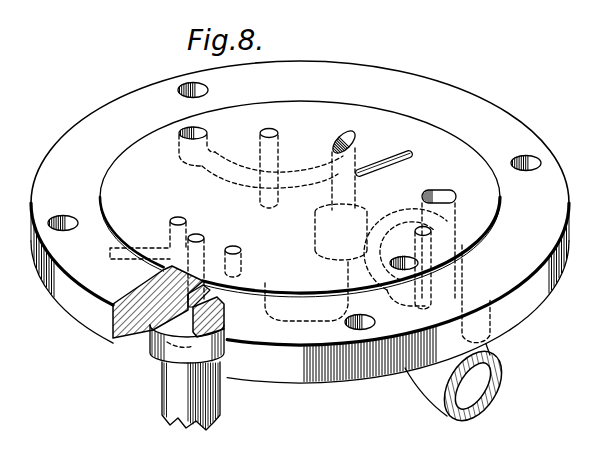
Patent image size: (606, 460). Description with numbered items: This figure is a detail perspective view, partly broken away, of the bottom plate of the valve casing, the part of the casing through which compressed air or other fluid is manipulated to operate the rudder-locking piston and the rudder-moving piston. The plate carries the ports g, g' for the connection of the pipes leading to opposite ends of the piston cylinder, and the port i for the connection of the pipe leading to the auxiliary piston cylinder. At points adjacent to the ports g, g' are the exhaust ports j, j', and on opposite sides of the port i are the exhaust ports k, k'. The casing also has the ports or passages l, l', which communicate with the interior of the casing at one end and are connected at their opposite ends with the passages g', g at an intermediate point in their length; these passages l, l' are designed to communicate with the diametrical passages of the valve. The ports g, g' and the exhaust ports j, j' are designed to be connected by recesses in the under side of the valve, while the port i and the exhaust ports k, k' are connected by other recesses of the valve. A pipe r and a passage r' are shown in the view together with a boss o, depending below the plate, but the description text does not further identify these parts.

The boss o is at (187, 408).
The port or passage l' is at (177, 133).
The exhaust port j is at (269, 144).
The port g' is at (351, 170).
The port g is at (439, 224).
The exhaust port j' is at (450, 255).
The port or passage l is at (431, 257).
The exhaust port k' is at (148, 216).
The port i is at (197, 235).
The exhaust port k is at (244, 260).
The passage r' is at (306, 318).
The pipe r is at (459, 341).